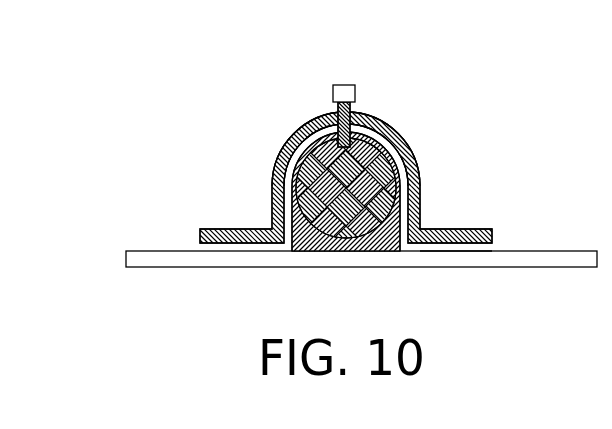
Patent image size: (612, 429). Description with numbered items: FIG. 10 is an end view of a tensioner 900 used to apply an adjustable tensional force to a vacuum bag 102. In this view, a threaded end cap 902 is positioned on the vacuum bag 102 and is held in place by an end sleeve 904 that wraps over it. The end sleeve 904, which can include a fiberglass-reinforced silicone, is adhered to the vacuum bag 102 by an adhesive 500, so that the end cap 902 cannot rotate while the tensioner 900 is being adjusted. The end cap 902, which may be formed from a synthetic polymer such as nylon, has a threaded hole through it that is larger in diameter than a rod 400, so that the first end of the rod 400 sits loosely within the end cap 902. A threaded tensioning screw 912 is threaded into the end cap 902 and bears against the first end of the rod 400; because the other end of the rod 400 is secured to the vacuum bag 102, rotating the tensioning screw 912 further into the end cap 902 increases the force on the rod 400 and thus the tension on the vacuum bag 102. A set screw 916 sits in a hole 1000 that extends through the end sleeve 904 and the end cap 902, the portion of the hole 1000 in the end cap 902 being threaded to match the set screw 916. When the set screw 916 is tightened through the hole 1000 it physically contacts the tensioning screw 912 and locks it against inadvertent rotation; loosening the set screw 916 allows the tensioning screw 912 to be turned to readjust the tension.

The vacuum bag 102 is at (127, 261).
The rod 400 is at (312, 253).
The adhesive 500 is at (462, 247).
The tensioner 900 is at (346, 171).
The threaded end cap 902 is at (402, 224).
The end sleeve 904 is at (295, 132).
The tensioning screw 912 is at (383, 255).
The set screw 916 is at (357, 92).
The hole 1000 is at (322, 103).